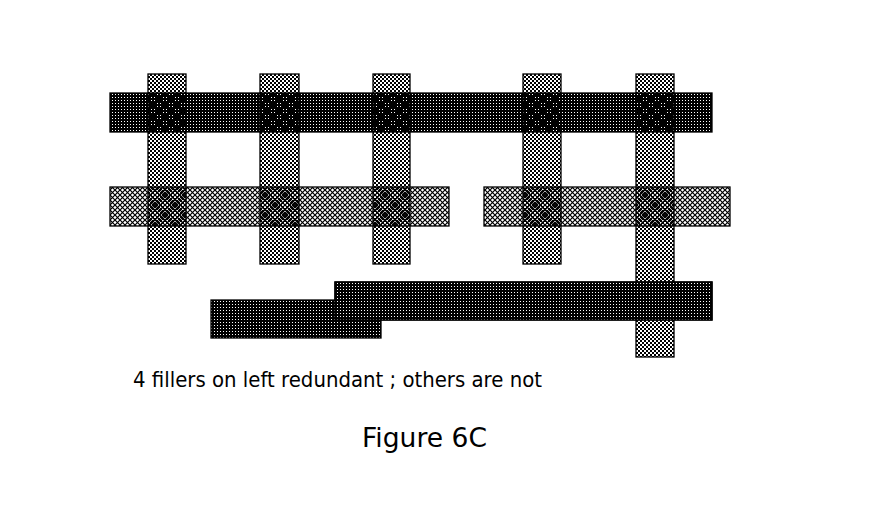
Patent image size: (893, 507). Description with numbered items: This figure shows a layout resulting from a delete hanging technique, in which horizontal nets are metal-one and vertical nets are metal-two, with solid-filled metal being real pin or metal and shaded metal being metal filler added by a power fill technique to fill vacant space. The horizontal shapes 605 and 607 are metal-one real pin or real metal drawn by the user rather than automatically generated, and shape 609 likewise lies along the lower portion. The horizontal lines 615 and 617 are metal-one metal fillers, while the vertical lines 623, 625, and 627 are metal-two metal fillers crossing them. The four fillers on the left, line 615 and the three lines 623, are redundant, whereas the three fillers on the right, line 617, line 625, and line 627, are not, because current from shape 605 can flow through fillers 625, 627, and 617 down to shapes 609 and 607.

The shape 605 is at (215, 93).
The shape 607 is at (211, 318).
The shape 609 is at (713, 305).
The line 615 is at (110, 204).
The line 617 is at (722, 187).
The line 623 is at (176, 74).
The line 625 is at (552, 74).
The line 627 is at (655, 74).